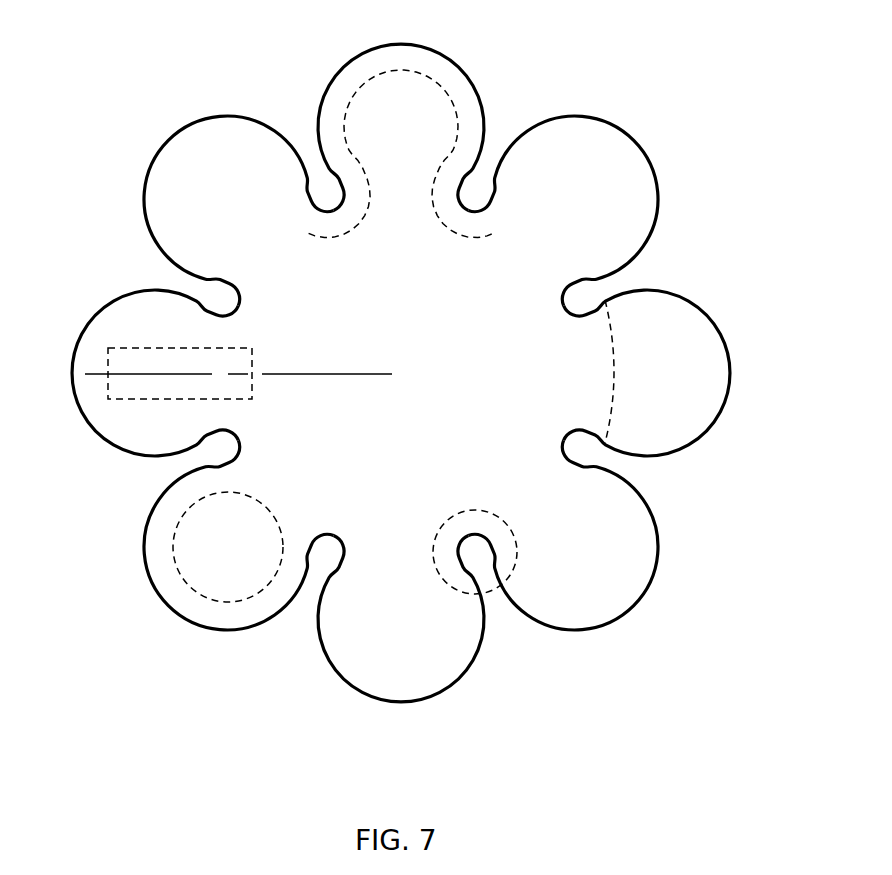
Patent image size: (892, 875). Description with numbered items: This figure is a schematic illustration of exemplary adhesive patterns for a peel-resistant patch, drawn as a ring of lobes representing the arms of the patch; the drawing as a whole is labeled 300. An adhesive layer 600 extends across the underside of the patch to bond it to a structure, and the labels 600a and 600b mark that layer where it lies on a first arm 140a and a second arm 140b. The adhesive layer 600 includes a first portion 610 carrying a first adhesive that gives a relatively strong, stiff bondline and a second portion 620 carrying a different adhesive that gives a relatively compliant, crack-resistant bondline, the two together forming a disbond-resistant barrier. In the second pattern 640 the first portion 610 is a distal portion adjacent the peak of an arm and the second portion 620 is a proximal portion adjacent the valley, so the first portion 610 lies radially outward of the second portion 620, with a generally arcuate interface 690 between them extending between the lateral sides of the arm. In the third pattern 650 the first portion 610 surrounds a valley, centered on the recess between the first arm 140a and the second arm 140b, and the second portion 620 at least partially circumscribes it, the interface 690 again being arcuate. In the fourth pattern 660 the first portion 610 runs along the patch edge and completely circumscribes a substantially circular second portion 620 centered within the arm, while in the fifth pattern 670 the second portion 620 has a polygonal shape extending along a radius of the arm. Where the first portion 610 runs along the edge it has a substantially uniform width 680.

The stent / lobed frame assembly 300 is at (429, 400).
The adhesive layer 600 is at (701, 368).
The lobe 600a is at (615, 552).
The lobe 600b is at (428, 646).
The first portion 610 is at (398, 100).
The second portion 620 is at (350, 374).
The second pattern 640 is at (740, 387).
The third pattern 650 is at (507, 623).
The fourth pattern 660 is at (245, 657).
The fifth pattern 670 is at (105, 282).
The width 680 is at (367, 80).
The interface 690 is at (348, 233).
The first arm 140a is at (615, 552).
The second arm 140b is at (407, 724).